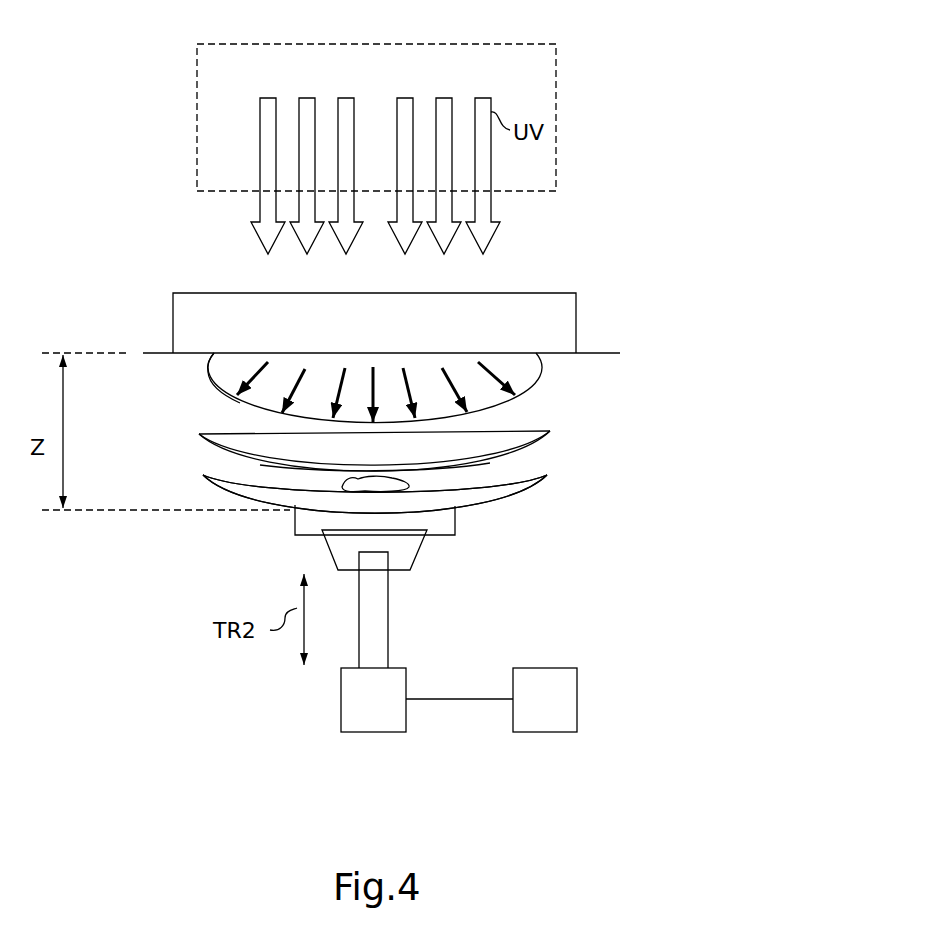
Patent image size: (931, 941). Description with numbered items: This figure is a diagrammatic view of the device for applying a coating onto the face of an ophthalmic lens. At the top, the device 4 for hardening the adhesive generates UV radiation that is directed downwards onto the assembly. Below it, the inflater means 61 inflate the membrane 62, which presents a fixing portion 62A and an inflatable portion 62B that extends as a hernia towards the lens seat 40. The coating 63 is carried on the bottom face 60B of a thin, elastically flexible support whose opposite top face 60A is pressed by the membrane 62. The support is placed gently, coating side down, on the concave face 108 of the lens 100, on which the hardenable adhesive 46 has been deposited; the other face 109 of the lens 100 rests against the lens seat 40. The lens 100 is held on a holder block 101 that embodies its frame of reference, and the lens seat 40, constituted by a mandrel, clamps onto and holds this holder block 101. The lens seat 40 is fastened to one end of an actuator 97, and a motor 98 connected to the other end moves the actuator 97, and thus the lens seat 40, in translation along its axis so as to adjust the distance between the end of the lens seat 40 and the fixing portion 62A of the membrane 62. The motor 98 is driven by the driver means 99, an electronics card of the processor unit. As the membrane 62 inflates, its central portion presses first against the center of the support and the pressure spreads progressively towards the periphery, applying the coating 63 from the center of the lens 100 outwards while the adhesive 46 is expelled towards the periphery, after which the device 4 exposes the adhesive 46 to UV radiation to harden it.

The device for hardening the adhesive 4 is at (555, 57).
The inflater means 61 is at (545, 296).
The membrane 62 is at (550, 388).
The fixing portion 62A is at (218, 356).
The inflatable portion 62B is at (212, 393).
The coating 63 is at (214, 453).
The top face 60A is at (540, 431).
The bottom face 60B is at (480, 448).
The adhesive 46 is at (363, 477).
The concave face 108 is at (530, 472).
The concave face 109 is at (517, 498).
The lens 100 is at (263, 493).
The holder block 101 is at (450, 522).
The lens seat 40 is at (413, 557).
The actuator 97 is at (383, 603).
The motor 98 is at (341, 692).
The driver means 99 is at (537, 732).